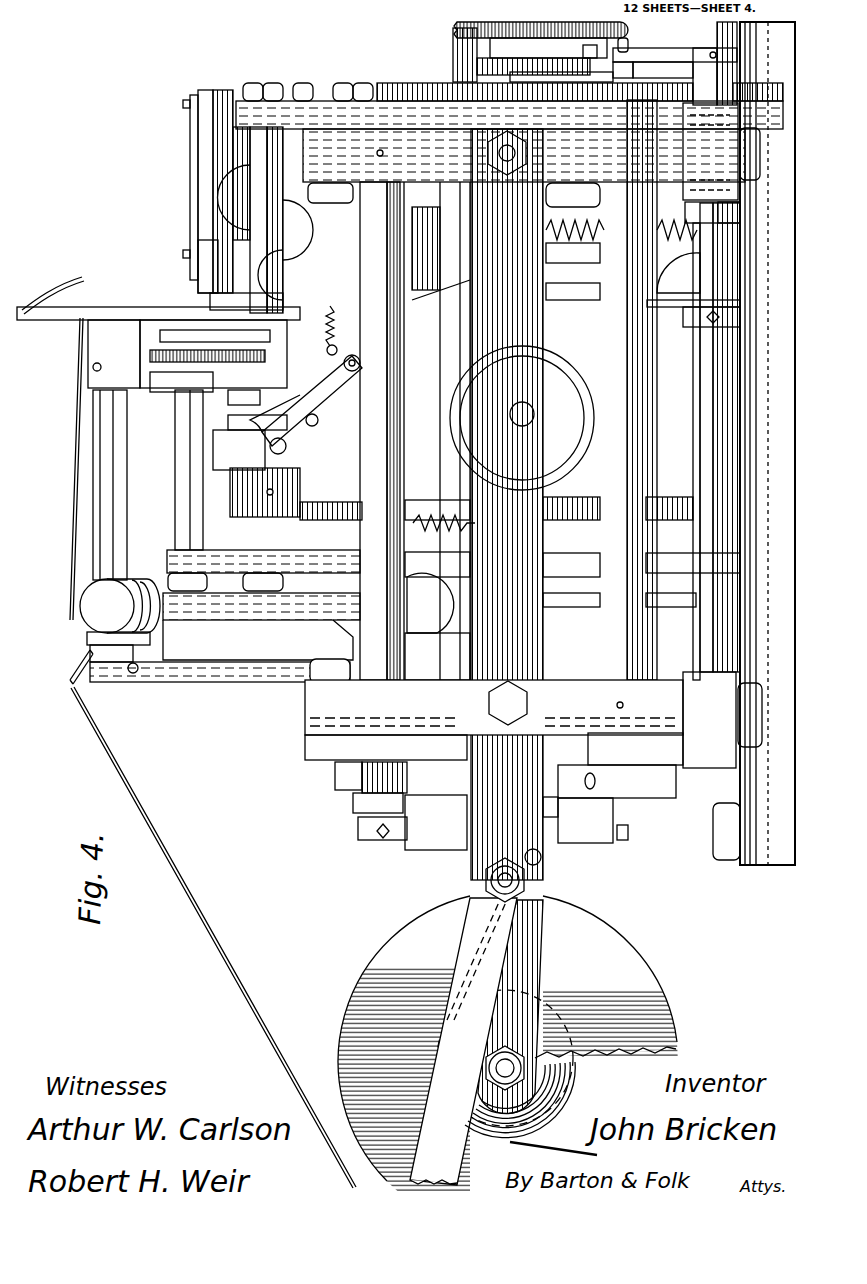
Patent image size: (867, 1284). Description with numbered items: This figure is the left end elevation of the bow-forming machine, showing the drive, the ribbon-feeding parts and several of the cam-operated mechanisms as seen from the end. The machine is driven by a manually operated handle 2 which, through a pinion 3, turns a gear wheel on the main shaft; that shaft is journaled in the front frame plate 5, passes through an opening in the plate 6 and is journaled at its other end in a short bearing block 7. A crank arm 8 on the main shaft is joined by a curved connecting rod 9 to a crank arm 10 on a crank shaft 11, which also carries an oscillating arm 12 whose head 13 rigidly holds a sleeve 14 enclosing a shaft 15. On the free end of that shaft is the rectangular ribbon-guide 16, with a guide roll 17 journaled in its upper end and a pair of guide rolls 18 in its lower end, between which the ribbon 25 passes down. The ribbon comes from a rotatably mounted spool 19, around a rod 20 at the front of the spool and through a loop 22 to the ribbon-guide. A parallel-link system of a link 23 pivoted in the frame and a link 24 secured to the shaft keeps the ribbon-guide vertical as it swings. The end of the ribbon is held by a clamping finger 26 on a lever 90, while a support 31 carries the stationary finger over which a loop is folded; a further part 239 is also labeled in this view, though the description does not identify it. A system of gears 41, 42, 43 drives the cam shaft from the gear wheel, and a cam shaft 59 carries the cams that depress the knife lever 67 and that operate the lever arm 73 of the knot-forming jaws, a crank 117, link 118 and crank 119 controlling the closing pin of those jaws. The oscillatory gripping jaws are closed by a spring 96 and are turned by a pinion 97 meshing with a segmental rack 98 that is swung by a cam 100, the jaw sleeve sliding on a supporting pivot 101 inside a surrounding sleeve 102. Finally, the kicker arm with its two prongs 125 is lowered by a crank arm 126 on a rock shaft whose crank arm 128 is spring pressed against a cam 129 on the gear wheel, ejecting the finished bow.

The handle 2 is at (655, 625).
The pinion 3 is at (416, 65).
The front frame plate 5 is at (281, 112).
The plate 6 is at (336, 562).
The bearing block 7 is at (364, 740).
The crank arm 8 is at (620, 792).
The curved connecting rod 9 is at (455, 832).
The crank arm 10 is at (345, 783).
The crank shaft 11 is at (358, 650).
The oscillating arm 12 is at (240, 622).
The head 13 is at (100, 603).
The sleeve 14 is at (105, 465).
The shaft 15 is at (120, 662).
The ribbon-guide 16 is at (208, 300).
The guide roll 17 is at (93, 367).
The guide rolls 18 is at (330, 335).
The spool 19 is at (393, 955).
The rod 20 is at (542, 860).
The loop 22 is at (65, 668).
The link 23 is at (215, 683).
The link 24 is at (136, 672).
The ribbon 25 is at (73, 508).
The clamping finger 26 is at (304, 427).
The support 31 is at (178, 468).
The gear 41 is at (372, 85).
The gear 42 is at (420, 60).
The gear 43 is at (590, 78).
The cam shaft 59 is at (516, 402).
The lever 67 is at (430, 285).
The lever arm 73 is at (200, 232).
The lever 90 is at (350, 378).
The spring 96 is at (235, 405).
The pinion 97 is at (232, 505).
The segmental rack 98 is at (300, 510).
The cam 100 is at (271, 453).
The supporting pivot 101 is at (478, 425).
The sleeve 102 is at (243, 460).
The crank 117 is at (178, 255).
The link 118 is at (193, 178).
The crank 119 is at (212, 200).
The prongs 125 is at (70, 290).
The crank arm 126 is at (90, 325).
The crank arm 128 is at (688, 58).
The cam 129 is at (662, 80).
The bar 239 is at (215, 340).